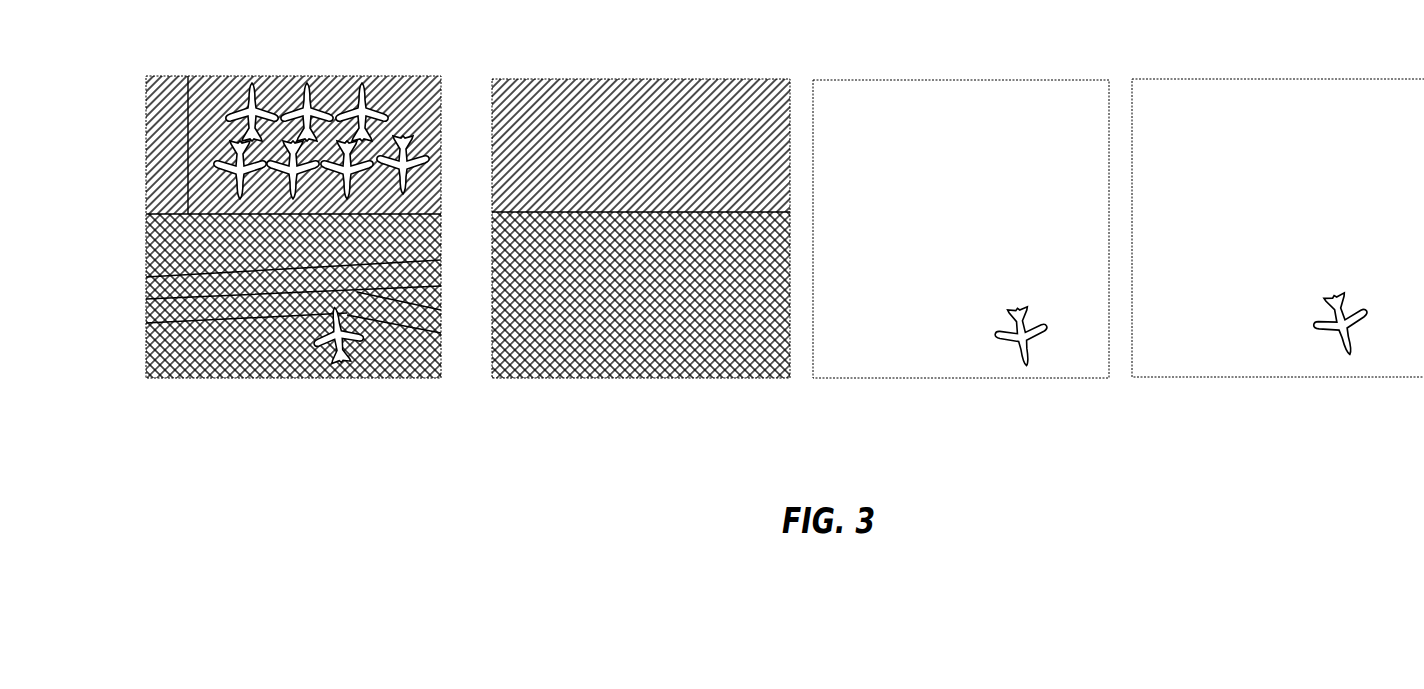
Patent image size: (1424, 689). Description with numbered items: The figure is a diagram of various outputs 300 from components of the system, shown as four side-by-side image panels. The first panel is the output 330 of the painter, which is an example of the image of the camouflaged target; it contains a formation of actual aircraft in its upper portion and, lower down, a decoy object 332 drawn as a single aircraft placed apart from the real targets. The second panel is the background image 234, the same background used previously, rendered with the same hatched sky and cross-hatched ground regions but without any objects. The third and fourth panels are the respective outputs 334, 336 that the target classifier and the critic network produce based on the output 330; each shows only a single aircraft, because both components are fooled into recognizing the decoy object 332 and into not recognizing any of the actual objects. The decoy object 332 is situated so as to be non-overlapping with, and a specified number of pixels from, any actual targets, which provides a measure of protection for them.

The outputs 300 is at (153, 64).
The output of the painter 330 is at (182, 378).
The decoy object 332 is at (340, 342).
The background image 234 is at (658, 380).
The output of the target classifier 334 is at (952, 382).
The output of the critic network 336 is at (1278, 380).